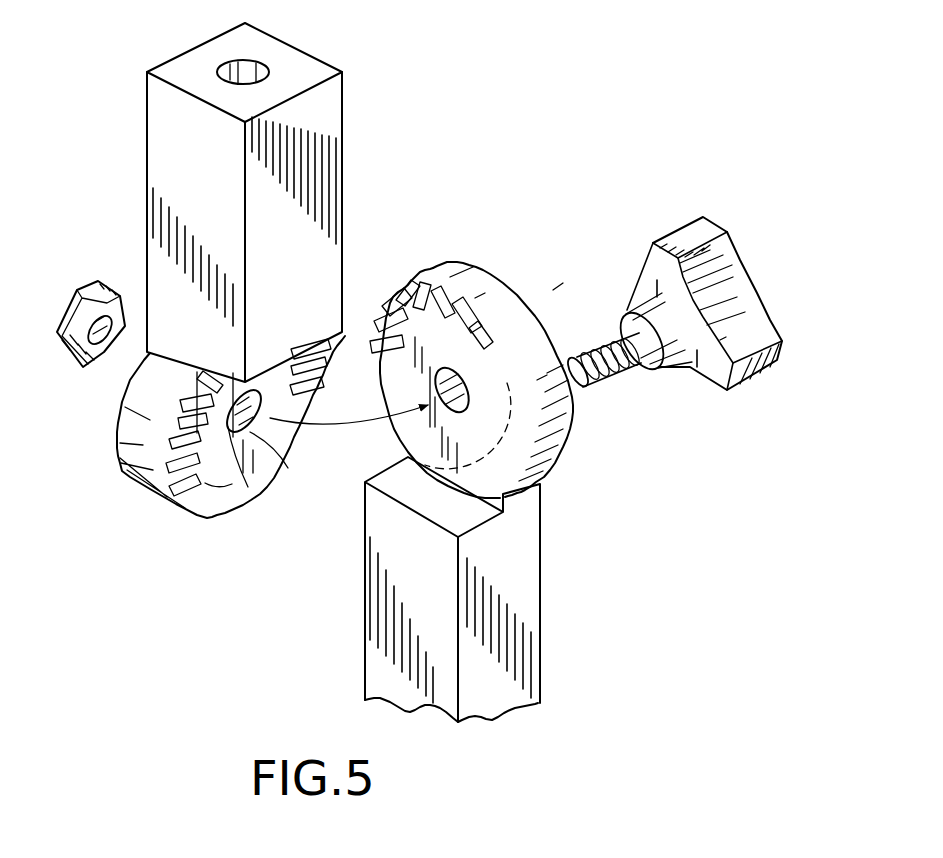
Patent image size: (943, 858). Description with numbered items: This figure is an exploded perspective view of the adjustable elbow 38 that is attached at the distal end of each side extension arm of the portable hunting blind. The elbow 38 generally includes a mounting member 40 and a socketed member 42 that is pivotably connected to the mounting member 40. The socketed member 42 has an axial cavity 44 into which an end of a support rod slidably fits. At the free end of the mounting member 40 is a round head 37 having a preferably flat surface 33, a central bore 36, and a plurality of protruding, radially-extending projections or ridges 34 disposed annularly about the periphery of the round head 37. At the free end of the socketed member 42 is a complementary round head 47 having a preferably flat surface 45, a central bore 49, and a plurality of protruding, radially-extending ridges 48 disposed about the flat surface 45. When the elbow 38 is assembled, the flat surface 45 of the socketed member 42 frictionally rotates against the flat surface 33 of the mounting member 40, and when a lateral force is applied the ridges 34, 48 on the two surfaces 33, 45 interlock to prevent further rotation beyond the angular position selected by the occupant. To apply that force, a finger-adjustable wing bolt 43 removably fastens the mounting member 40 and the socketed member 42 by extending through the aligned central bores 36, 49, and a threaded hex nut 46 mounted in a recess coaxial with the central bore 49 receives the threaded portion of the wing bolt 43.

The flat surface 33 is at (457, 435).
The ridges 34 is at (398, 290).
The central bore 36 is at (437, 379).
The round head 37 is at (494, 355).
The elbow 38 is at (234, 650).
The mounting member 40 is at (376, 662).
The socketed member 42 is at (333, 172).
The wing bolt 43 is at (746, 283).
The axial cavity 44 is at (262, 68).
The flat surface 45 is at (248, 470).
The threaded hex nut 46 is at (60, 307).
The round head 47 is at (229, 456).
The ridges 48 is at (190, 515).
The central bore 49 is at (257, 426).